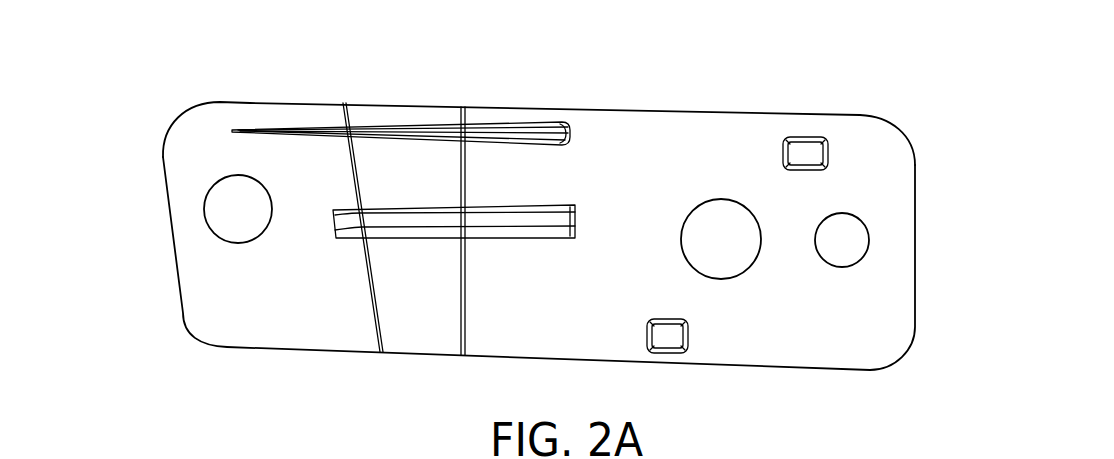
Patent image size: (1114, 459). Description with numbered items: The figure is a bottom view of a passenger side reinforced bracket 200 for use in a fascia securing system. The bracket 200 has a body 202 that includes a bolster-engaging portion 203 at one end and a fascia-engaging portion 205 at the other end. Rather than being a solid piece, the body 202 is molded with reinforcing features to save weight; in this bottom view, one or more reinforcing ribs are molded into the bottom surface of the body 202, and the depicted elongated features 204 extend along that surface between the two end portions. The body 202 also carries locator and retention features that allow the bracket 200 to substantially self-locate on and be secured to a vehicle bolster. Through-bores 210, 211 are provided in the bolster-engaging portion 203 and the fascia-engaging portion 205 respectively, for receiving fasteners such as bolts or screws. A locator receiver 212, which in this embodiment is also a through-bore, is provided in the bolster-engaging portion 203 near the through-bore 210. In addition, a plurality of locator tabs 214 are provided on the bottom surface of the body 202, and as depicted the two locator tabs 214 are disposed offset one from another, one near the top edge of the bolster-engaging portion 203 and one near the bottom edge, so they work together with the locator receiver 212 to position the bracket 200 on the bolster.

The reinforced bracket 200 is at (974, 215).
The body 202 is at (645, 135).
The bolster-engaging portion 203 is at (855, 110).
The slot 204 is at (398, 127).
The fascia-engaging portion 205 is at (241, 97).
The through-bore 210 is at (693, 216).
The through-bore 211 is at (238, 244).
The locator receiver 212 is at (855, 213).
The locator tabs 214 is at (783, 152).